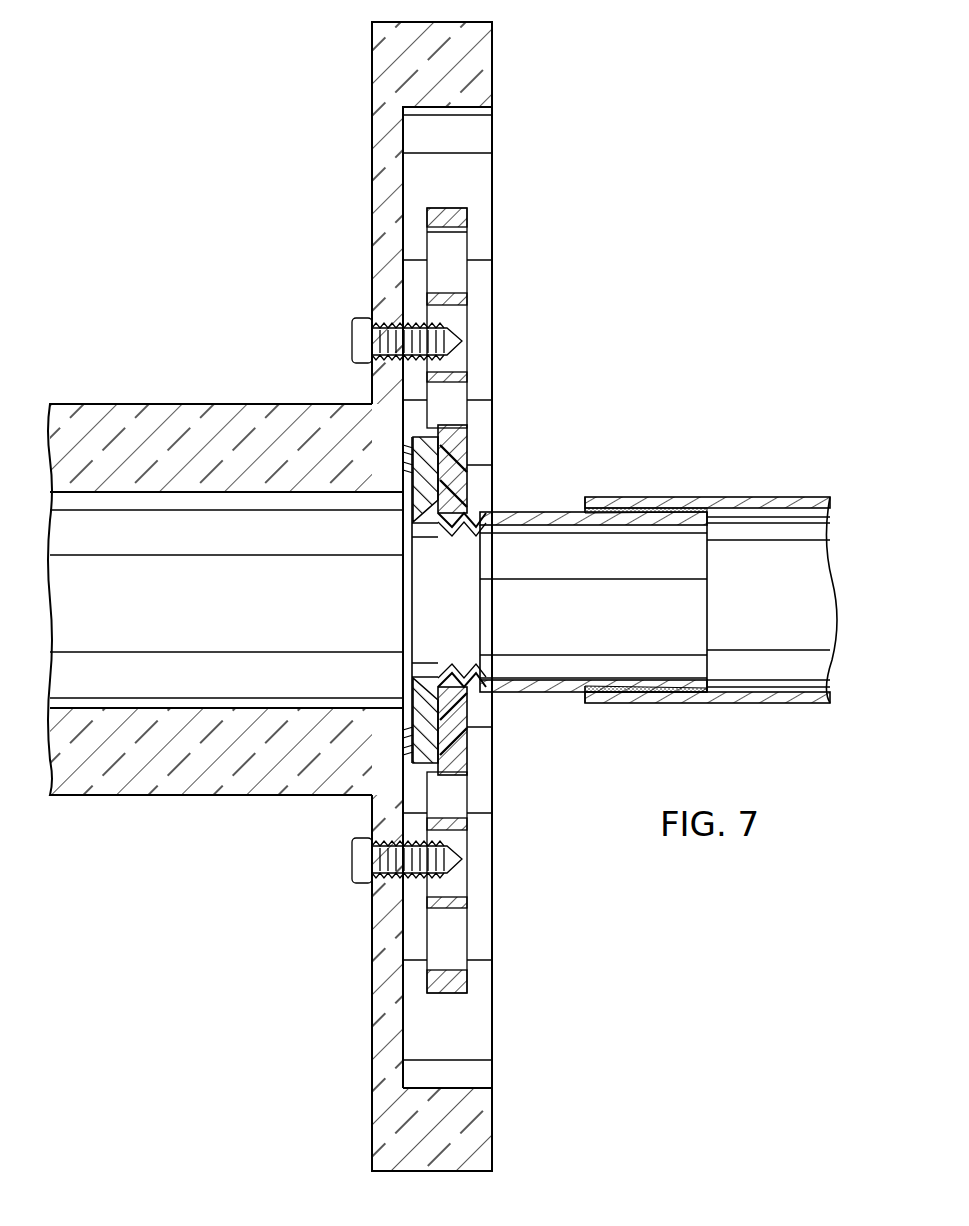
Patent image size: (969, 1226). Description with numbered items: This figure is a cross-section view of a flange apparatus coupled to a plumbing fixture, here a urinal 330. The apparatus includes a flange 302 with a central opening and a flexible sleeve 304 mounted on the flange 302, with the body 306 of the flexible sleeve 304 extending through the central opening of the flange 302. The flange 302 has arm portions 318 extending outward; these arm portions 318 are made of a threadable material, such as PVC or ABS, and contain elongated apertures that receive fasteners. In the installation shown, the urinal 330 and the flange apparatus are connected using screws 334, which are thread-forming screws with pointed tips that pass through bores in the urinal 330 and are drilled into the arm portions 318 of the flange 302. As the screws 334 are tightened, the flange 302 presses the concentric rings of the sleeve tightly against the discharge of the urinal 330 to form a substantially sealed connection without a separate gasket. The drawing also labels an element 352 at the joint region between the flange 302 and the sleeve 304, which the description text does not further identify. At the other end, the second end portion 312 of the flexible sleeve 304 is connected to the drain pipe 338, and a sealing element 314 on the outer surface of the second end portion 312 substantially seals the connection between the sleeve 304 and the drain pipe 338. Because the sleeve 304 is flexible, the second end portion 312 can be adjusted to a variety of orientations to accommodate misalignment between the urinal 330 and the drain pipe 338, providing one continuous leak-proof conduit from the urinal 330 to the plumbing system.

The flange 302 is at (493, 432).
The urinal 330 is at (205, 404).
The arm portions 318 is at (455, 245).
The screws 334 is at (352, 336).
The fitting body 352 is at (480, 700).
The body of the flexible sleeve 306 is at (536, 685).
The second end portion 312 is at (693, 553).
The drain pipe 338 is at (768, 497).
The sealing element 314 is at (575, 512).
The flexible sleeve 304 is at (622, 716).